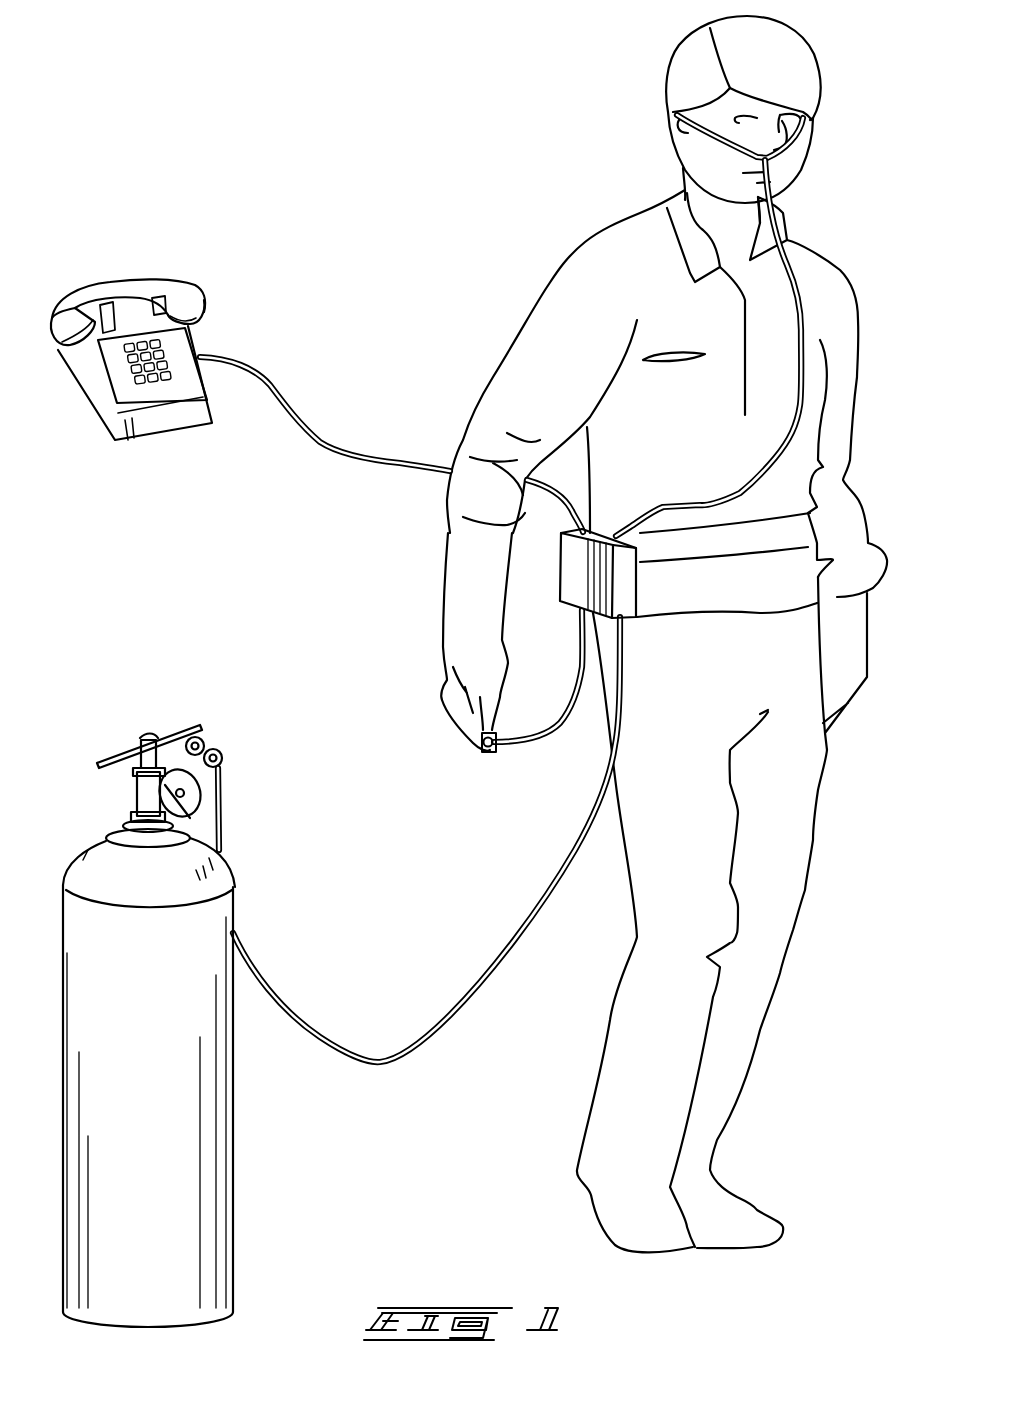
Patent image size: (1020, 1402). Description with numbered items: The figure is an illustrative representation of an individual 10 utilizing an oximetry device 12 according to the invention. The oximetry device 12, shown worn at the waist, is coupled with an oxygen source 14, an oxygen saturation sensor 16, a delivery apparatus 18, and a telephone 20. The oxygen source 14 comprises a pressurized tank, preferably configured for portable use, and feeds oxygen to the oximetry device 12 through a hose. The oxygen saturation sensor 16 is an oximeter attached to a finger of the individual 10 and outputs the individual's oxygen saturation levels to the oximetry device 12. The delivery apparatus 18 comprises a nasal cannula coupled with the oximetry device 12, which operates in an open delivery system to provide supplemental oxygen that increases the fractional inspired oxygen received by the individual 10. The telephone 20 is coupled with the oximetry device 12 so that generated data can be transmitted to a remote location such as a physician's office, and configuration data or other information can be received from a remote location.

The individual 10 is at (878, 165).
The oximetry device 12 is at (573, 575).
The oxygen source 14 is at (158, 1008).
The oxygen saturation sensor 16 is at (488, 752).
The delivery apparatus 18 is at (703, 162).
The telephone 20 is at (170, 417).